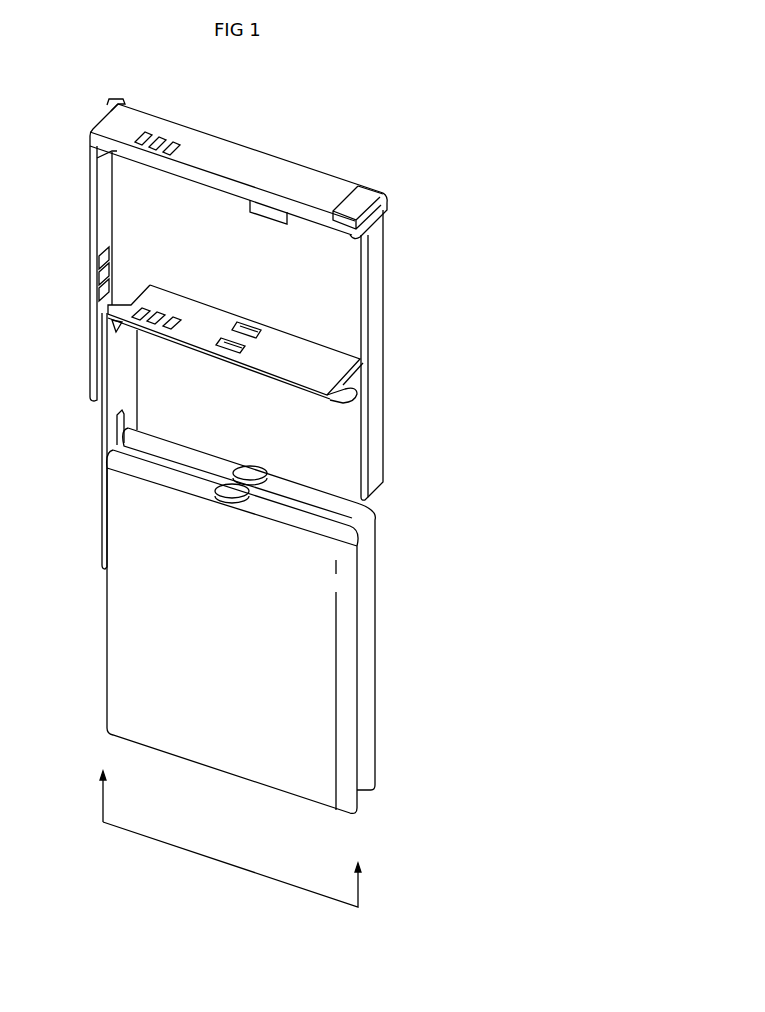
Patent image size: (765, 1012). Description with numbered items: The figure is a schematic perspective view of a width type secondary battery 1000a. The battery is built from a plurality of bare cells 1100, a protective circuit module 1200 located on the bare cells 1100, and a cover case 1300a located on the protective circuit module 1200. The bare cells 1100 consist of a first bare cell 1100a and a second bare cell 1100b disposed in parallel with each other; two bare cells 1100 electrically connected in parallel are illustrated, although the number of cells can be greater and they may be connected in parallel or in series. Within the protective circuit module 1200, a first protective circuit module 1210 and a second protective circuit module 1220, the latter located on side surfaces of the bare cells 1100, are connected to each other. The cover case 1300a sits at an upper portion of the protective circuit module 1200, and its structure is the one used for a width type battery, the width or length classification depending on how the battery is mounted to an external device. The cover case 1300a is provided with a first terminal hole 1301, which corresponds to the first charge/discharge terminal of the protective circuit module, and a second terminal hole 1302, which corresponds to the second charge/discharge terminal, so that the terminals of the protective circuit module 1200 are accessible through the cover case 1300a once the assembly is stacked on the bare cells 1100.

The width type secondary battery 1000a is at (429, 111).
The cover case 1300a is at (241, 146).
The first terminal hole 1301 is at (158, 138).
The second terminal hole 1302 is at (103, 280).
The protective circuit module 1200 is at (281, 324).
The first protective circuit module 1210 is at (194, 304).
The second protective circuit module 1220 is at (106, 424).
The bare cells 1100 is at (415, 837).
The first bare cell 1100a is at (348, 805).
The second bare cell 1100b is at (373, 787).